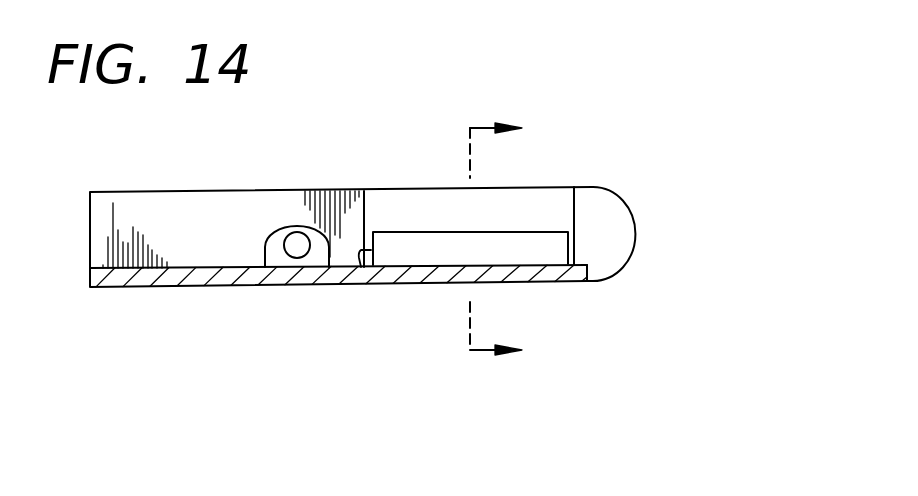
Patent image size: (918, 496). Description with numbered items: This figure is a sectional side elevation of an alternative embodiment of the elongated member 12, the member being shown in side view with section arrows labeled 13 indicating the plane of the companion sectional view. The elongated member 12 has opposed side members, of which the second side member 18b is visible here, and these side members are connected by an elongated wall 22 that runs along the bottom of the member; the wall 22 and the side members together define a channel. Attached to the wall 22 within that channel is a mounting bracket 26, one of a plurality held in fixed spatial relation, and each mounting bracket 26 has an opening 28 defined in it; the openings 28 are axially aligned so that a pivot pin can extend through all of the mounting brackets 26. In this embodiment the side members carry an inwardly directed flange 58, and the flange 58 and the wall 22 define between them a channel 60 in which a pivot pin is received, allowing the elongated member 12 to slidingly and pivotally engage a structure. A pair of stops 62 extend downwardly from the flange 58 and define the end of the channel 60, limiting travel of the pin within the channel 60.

The elongated member 12 is at (668, 161).
The section line 13- 13 is at (519, 228).
The second side member 18b is at (205, 211).
The elongated wall 22 is at (427, 277).
The mounting bracket 26 is at (313, 226).
The opening 28 is at (308, 235).
The inwardly directed flange 58 is at (547, 207).
The channel 60 is at (540, 249).
The stop 62 is at (575, 248).